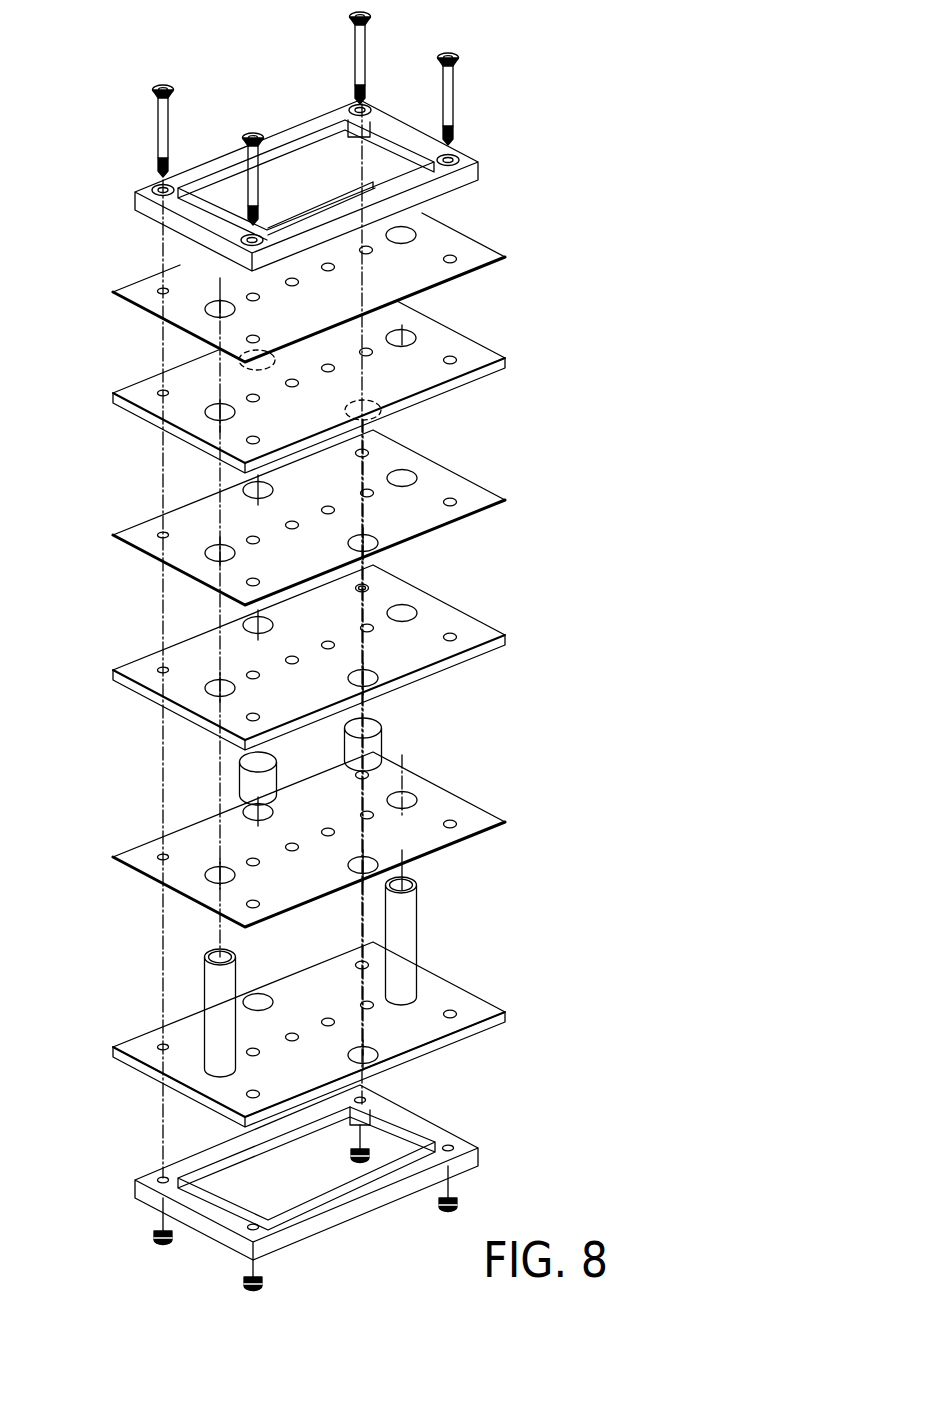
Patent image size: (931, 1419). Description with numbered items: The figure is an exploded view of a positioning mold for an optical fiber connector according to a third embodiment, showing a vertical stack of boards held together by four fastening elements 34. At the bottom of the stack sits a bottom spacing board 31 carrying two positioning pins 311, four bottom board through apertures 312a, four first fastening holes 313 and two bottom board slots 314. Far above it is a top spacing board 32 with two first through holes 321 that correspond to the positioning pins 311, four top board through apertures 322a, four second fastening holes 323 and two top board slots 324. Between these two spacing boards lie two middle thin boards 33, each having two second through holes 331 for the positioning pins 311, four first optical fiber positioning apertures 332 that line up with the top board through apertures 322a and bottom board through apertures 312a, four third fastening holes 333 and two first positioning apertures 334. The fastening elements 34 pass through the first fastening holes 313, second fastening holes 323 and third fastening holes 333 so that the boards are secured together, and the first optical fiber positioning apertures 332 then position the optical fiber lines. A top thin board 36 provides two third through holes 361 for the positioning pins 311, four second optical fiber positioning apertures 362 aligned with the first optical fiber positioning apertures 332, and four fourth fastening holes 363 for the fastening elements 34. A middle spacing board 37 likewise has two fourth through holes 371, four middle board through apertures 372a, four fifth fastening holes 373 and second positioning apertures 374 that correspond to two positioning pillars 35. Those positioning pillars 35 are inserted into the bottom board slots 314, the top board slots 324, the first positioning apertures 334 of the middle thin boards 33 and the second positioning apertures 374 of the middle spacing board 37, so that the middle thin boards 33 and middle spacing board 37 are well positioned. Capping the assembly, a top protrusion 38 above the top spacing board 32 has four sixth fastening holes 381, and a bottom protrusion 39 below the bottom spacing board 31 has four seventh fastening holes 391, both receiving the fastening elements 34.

The bottom spacing board 31 is at (132, 1042).
The positioning pins 311 is at (405, 910).
The bottom board through apertures 312a is at (372, 1006).
The first fastening holes 313 is at (163, 1045).
The bottom board slots 314 is at (378, 1057).
The top spacing board 32 is at (132, 390).
The first through holes 321 is at (408, 336).
The top board through apertures 322a is at (372, 353).
The second fastening holes 323 is at (163, 390).
The top board slots 324 is at (383, 402).
The middle thin boards 33 is at (132, 530).
The second through holes 331 is at (408, 480).
The first optical fiber positioning apertures 332 is at (372, 495).
The third fastening holes 333 is at (163, 532).
The first positioning apertures 334 is at (378, 548).
The fastening elements 34 is at (160, 132).
The positioning pillars 35 is at (247, 780).
The top thin board 36 is at (132, 289).
The third through holes 361 is at (410, 230).
The second optical fiber positioning apertures 362 is at (372, 251).
The fourth fastening holes 363 is at (163, 288).
The middle spacing board 37 is at (132, 665).
The fourth through holes 371 is at (408, 617).
The middle board through apertures 372a is at (372, 630).
The fifth fastening holes 373 is at (163, 668).
The second positioning apertures 374 is at (378, 684).
The top protrusion 38 is at (150, 188).
The sixth fastening holes 381 is at (452, 160).
The bottom protrusion 39 is at (148, 1177).
The seventh fastening holes 391 is at (452, 1146).